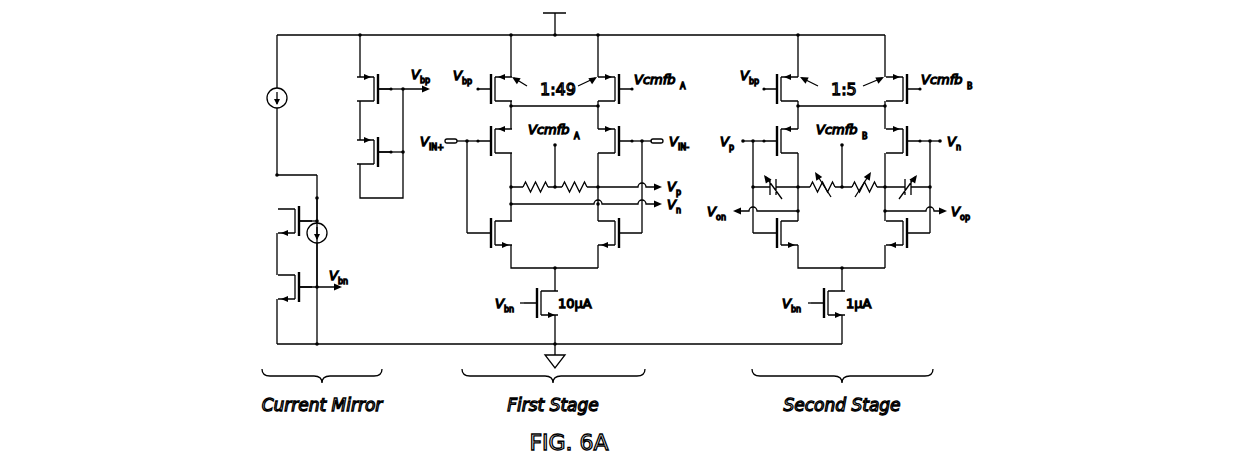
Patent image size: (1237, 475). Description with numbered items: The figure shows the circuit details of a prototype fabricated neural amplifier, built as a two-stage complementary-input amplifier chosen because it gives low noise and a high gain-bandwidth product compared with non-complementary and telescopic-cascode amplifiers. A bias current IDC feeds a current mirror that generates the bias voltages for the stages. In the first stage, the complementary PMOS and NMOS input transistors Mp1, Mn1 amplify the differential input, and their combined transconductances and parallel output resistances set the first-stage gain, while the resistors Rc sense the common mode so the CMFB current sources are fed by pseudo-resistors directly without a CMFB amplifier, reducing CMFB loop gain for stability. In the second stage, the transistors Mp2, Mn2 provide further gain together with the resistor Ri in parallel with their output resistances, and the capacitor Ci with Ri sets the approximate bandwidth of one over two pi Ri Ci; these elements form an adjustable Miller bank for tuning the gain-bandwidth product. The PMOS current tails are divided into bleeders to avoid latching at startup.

The DC bias current source (200 nA) IDC is at (317, 189).
The first-stage PMOS transistor Mp1 is at (554, 131).
The first-stage NMOS transistor Mn1 is at (551, 245).
The common-mode sensing resistor of first stage Rc is at (554, 173).
The second-stage PMOS transistor Mp2 is at (841, 131).
The second-stage NMOS transistor Mn2 is at (838, 245).
The resistor Ri is at (841, 176).
The capacitor Ci is at (841, 173).